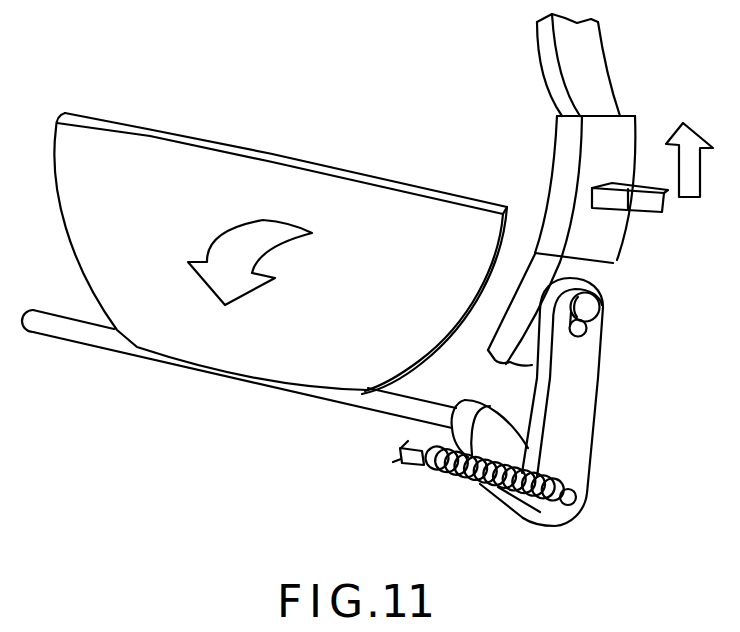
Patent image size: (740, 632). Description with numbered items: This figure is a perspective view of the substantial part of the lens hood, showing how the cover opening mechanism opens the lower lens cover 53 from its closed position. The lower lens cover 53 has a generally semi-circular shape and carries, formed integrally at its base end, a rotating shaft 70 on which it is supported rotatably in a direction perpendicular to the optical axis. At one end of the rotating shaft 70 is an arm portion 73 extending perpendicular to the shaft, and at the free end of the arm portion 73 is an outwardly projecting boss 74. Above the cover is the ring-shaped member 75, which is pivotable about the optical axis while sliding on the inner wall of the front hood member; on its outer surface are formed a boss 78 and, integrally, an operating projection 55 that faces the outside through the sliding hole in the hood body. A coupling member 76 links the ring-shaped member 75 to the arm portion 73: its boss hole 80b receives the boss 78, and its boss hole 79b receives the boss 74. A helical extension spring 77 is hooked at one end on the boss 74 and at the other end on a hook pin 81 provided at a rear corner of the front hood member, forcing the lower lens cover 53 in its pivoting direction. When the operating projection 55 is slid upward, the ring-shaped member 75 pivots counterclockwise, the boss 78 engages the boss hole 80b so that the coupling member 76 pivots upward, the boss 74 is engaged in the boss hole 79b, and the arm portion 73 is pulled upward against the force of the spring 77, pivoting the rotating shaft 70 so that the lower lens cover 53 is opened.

The lower lens cover 53 is at (280, 172).
The operating projection 55 is at (653, 208).
The rotating shaft 70 is at (242, 383).
The arm portion 73 is at (503, 430).
The boss 74 is at (570, 495).
The ring-shaped member 75 is at (590, 69).
The coupling member 76 is at (582, 402).
The helical extension spring 77 is at (487, 487).
The boss 78 is at (590, 313).
The boss hole 79b is at (567, 513).
The boss hole 80b is at (583, 330).
The hook pin 81 is at (425, 467).